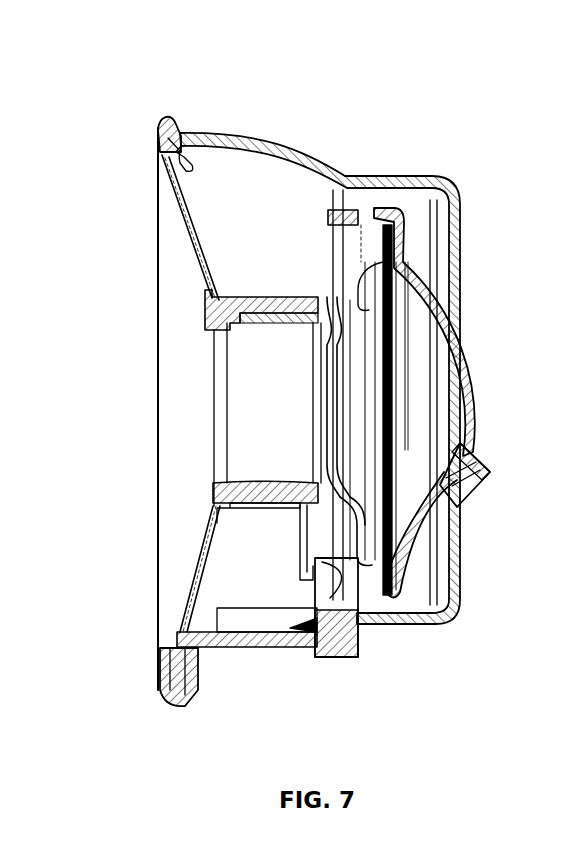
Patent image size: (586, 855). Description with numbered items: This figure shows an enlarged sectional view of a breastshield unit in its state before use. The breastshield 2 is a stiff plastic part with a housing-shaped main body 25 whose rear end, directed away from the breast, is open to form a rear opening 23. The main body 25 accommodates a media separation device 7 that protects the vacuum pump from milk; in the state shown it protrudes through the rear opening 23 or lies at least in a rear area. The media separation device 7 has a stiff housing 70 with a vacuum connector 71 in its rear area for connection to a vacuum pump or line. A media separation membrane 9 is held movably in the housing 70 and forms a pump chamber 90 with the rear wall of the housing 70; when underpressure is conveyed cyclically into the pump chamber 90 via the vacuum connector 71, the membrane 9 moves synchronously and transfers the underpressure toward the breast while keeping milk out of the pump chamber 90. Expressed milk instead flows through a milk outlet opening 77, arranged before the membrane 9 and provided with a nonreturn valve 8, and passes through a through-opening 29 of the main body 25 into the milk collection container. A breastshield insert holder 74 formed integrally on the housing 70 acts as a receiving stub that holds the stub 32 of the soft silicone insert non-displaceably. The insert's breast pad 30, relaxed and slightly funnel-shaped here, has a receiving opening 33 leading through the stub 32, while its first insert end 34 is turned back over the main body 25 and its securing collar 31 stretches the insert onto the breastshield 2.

The breastshield 2 is at (265, 106).
The media separation device 7 is at (486, 333).
The nonreturn valve 8 is at (358, 644).
The media separation membrane 9 is at (318, 475).
The rear opening 23 is at (462, 245).
The main body 25 is at (330, 172).
The through-opening 29 is at (280, 640).
The breast pad 30 is at (157, 238).
The securing collar 31 is at (160, 116).
The stub 32 is at (226, 331).
The receiving opening 33 is at (277, 418).
The first insert end 34 is at (157, 588).
The housing 70 is at (468, 369).
The vacuum connector 71 is at (480, 486).
The breastshield insert holder 74 is at (257, 296).
The milk outlet opening 77 is at (398, 592).
The pump chamber 90 is at (355, 436).